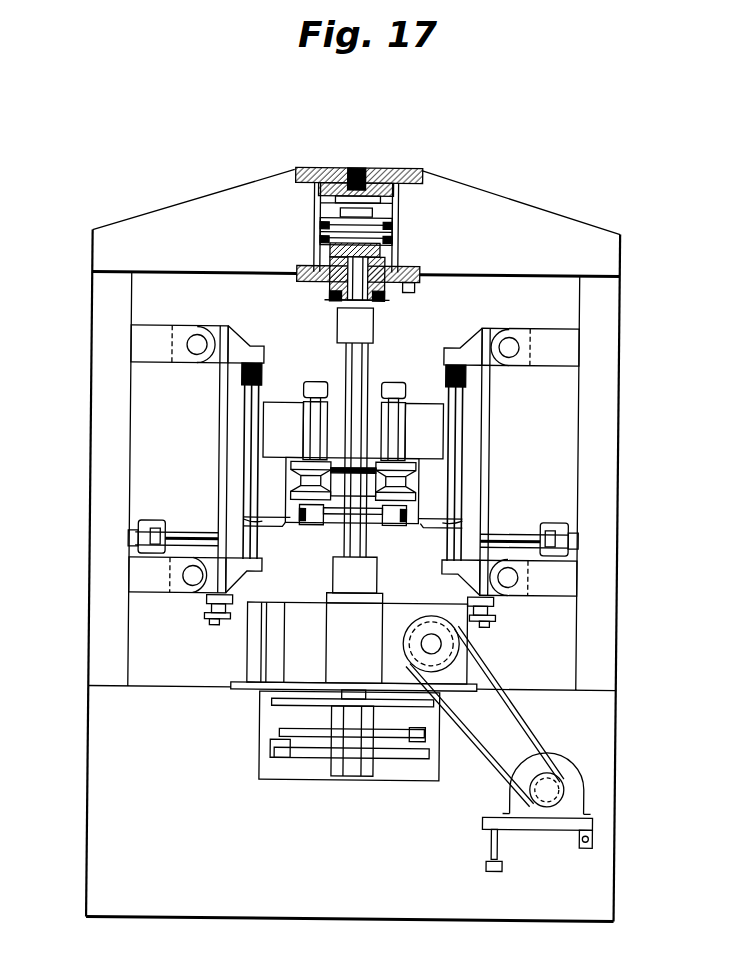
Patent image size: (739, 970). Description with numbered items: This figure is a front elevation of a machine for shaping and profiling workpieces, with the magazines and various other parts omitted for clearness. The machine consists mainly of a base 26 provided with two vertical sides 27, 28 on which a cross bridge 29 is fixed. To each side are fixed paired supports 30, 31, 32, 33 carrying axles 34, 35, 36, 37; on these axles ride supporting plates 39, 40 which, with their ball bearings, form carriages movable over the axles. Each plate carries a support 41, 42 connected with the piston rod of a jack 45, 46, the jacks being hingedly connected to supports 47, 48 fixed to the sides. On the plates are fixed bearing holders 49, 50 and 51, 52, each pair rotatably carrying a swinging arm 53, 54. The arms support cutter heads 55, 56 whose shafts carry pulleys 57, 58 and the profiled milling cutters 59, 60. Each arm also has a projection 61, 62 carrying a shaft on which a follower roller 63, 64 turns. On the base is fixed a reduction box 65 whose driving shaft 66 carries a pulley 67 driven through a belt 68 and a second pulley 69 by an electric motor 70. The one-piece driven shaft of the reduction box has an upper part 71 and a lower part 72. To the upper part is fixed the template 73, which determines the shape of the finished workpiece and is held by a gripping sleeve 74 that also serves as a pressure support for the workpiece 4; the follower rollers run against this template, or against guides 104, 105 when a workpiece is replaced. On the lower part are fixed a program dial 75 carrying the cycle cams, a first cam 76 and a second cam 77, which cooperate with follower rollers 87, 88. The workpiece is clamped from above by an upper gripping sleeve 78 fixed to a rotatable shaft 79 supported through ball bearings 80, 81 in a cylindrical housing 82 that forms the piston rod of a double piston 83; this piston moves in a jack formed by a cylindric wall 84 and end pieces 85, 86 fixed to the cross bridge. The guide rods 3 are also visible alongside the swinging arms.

The guide rods 3 is at (245, 437).
The workpiece 4 is at (340, 460).
The base 26 is at (89, 862).
The vertical side 27 is at (89, 646).
The vertical side 28 is at (617, 634).
The cross bridge 29 is at (522, 212).
The support 30 is at (180, 342).
The support 31 is at (180, 591).
The support 32 is at (531, 348).
The support 33 is at (522, 593).
The axle 34 is at (195, 356).
The axle 35 is at (193, 587).
The axle 36 is at (507, 356).
The axle 37 is at (508, 586).
The supporting slide or plate 39 is at (218, 464).
The supporting slide or plate 40 is at (488, 456).
The support 41 is at (188, 534).
The support 42 is at (524, 533).
The jack 45 is at (151, 522).
The jack 46 is at (554, 521).
The support 47 is at (128, 540).
The support 48 is at (578, 538).
The bearing holder 49 is at (256, 347).
The bearing holder 50 is at (262, 568).
The bearing holder 51 is at (456, 347).
The bearing holder 52 is at (442, 569).
The swinging arm 53 is at (256, 372).
The swinging arm 54 is at (448, 372).
The cutter head 55 is at (281, 408).
The cutter head 56 is at (420, 408).
The pulley 57 is at (314, 382).
The pulley 58 is at (394, 382).
The milling cutter 59 is at (300, 482).
The milling cutter 60 is at (405, 482).
The projection 61 is at (278, 528).
The projection 62 is at (428, 528).
The follower roller 63 is at (308, 526).
The follower roller 64 is at (394, 526).
The reduction box 65 is at (262, 652).
The driving shaft 66 is at (421, 642).
The pulley 67 is at (422, 640).
The belt 68 is at (528, 730).
The second pulley 69 is at (566, 785).
The electric motor 70 is at (550, 828).
The driven shaft upper part 71 is at (340, 560).
The driven shaft lower part 72 is at (352, 690).
The template 73 is at (350, 515).
The gripping sleeve 74 is at (372, 496).
The program dial 75 is at (318, 706).
The first cam 76 is at (281, 734).
The second cam 77 is at (392, 754).
The upper gripping sleeve 78 is at (355, 356).
The rotatable shaft 79 is at (340, 282).
The ball bearing 80 is at (395, 270).
The ball bearing 81 is at (376, 296).
The housing 82 is at (327, 248).
The double piston 83 is at (389, 212).
The cylindric wall 84 is at (311, 210).
The end piece 85 is at (377, 168).
The end piece 86 is at (410, 284).
The follower roller 87 is at (272, 750).
The follower roller 88 is at (427, 735).
The guide 104 is at (250, 519).
The guide 105 is at (455, 519).